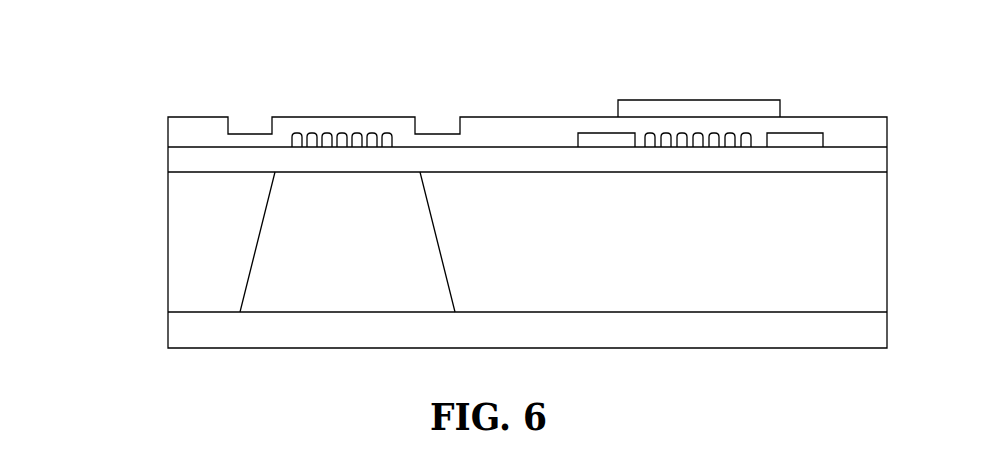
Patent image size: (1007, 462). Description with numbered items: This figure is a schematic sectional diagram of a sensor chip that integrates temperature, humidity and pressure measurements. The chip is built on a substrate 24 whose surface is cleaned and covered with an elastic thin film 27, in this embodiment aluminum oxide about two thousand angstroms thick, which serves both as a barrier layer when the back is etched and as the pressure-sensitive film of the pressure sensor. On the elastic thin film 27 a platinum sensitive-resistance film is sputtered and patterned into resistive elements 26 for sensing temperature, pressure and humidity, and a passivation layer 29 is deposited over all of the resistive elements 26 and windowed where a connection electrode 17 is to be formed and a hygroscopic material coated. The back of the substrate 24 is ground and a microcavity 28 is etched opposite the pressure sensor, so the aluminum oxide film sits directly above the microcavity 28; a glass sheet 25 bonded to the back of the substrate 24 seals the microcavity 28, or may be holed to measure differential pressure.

The electrode 17 is at (702, 76).
The substrate 24 is at (483, 202).
The glass sheet 25 is at (478, 294).
The resistive elements 26 is at (308, 100).
The elastic thin film 27 is at (527, 111).
The microcavity 28 is at (412, 193).
The passivation layer 29 is at (741, 91).